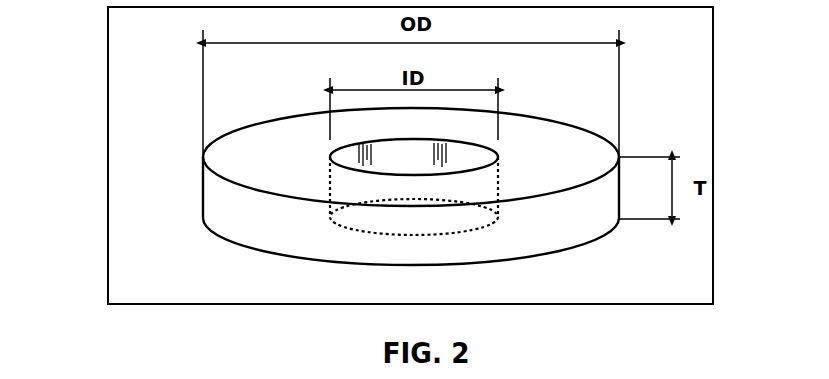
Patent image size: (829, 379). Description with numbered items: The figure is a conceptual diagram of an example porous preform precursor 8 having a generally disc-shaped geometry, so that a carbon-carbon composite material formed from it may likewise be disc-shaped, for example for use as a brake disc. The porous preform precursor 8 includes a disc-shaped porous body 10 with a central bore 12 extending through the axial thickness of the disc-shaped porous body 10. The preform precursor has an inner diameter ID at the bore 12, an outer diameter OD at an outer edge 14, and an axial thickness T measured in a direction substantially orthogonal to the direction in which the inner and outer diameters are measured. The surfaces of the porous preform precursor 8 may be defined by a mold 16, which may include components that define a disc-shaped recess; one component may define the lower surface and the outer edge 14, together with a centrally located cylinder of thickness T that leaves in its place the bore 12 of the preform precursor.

The porous preform precursor 8 is at (372, 162).
The disc-shaped porous body 10 is at (558, 238).
The central bore 12 is at (508, 152).
The outer edge 14 is at (203, 190).
The mold 16 is at (108, 220).